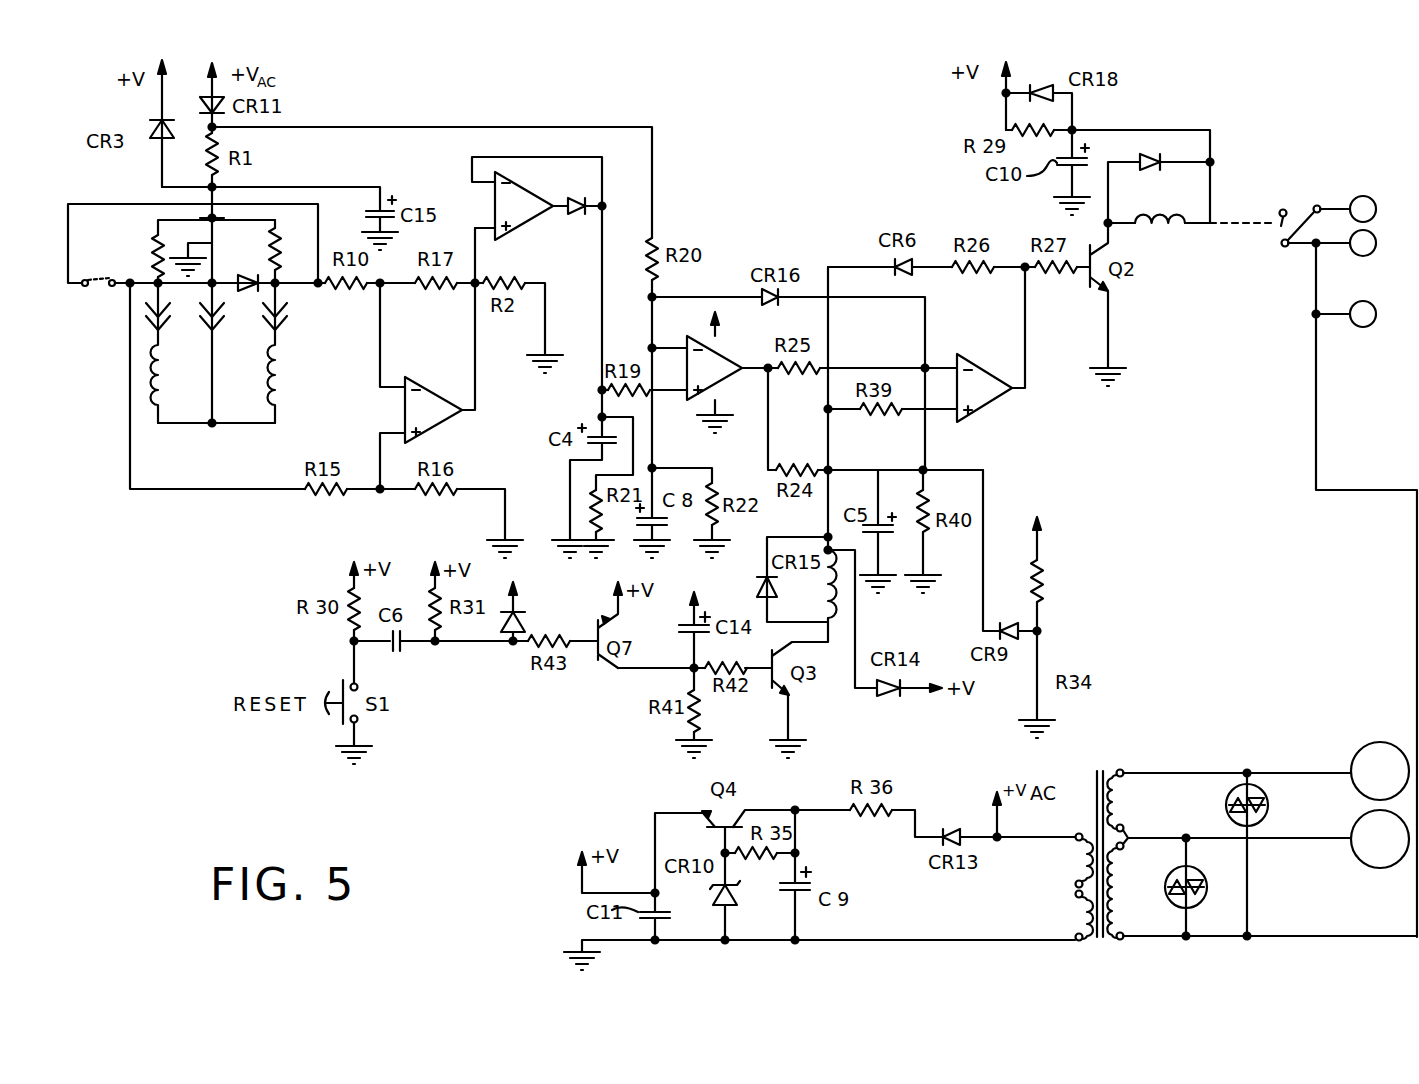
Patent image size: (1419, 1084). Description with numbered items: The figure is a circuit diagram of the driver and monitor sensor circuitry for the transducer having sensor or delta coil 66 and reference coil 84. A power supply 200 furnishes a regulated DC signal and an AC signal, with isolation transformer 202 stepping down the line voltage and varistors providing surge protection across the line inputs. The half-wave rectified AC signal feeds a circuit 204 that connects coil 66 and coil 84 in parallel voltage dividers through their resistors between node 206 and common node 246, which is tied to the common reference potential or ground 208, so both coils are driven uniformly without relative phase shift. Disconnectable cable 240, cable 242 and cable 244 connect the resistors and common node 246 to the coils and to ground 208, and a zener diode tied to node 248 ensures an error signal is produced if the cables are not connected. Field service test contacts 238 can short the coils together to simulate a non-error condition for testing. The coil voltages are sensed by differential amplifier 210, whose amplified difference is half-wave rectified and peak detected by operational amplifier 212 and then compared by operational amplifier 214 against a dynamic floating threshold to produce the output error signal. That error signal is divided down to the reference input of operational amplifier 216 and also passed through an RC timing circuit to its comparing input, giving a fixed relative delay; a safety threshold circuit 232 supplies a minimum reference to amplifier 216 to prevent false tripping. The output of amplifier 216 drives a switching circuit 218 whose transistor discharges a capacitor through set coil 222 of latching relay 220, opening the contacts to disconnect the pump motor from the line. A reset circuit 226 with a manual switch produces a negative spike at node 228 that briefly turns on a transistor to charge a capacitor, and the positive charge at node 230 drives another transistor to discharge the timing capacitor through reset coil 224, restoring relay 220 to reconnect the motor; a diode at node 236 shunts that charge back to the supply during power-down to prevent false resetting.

The power supply 200 is at (1157, 767).
The isolation transformer 202 is at (1108, 740).
The circuit 204 is at (146, 243).
The node 206 is at (210, 218).
The common reference potential or ground 208 is at (200, 242).
The differential amplifier 210 is at (438, 425).
The operational amplifier 212 is at (518, 227).
The operational amplifier 214 is at (693, 402).
The operational amplifier 216 is at (992, 409).
The switching circuit 218 is at (1167, 250).
The latching relay 220 is at (1300, 190).
The set coil 222 is at (1157, 226).
The reset coil 224 is at (820, 594).
The reset circuit 226 is at (460, 672).
The node 228 is at (513, 646).
The node 230 is at (688, 678).
The safety threshold circuit 232 is at (1062, 628).
The node 236 is at (827, 536).
The field service test contacts 238 is at (94, 298).
The cable 240 is at (172, 328).
The cable 242 is at (287, 323).
The cable 244 is at (207, 325).
The common node 246 is at (212, 426).
The node 248 is at (279, 288).
The sensor or delta coil 66 is at (165, 392).
The reference coil 84 is at (268, 393).